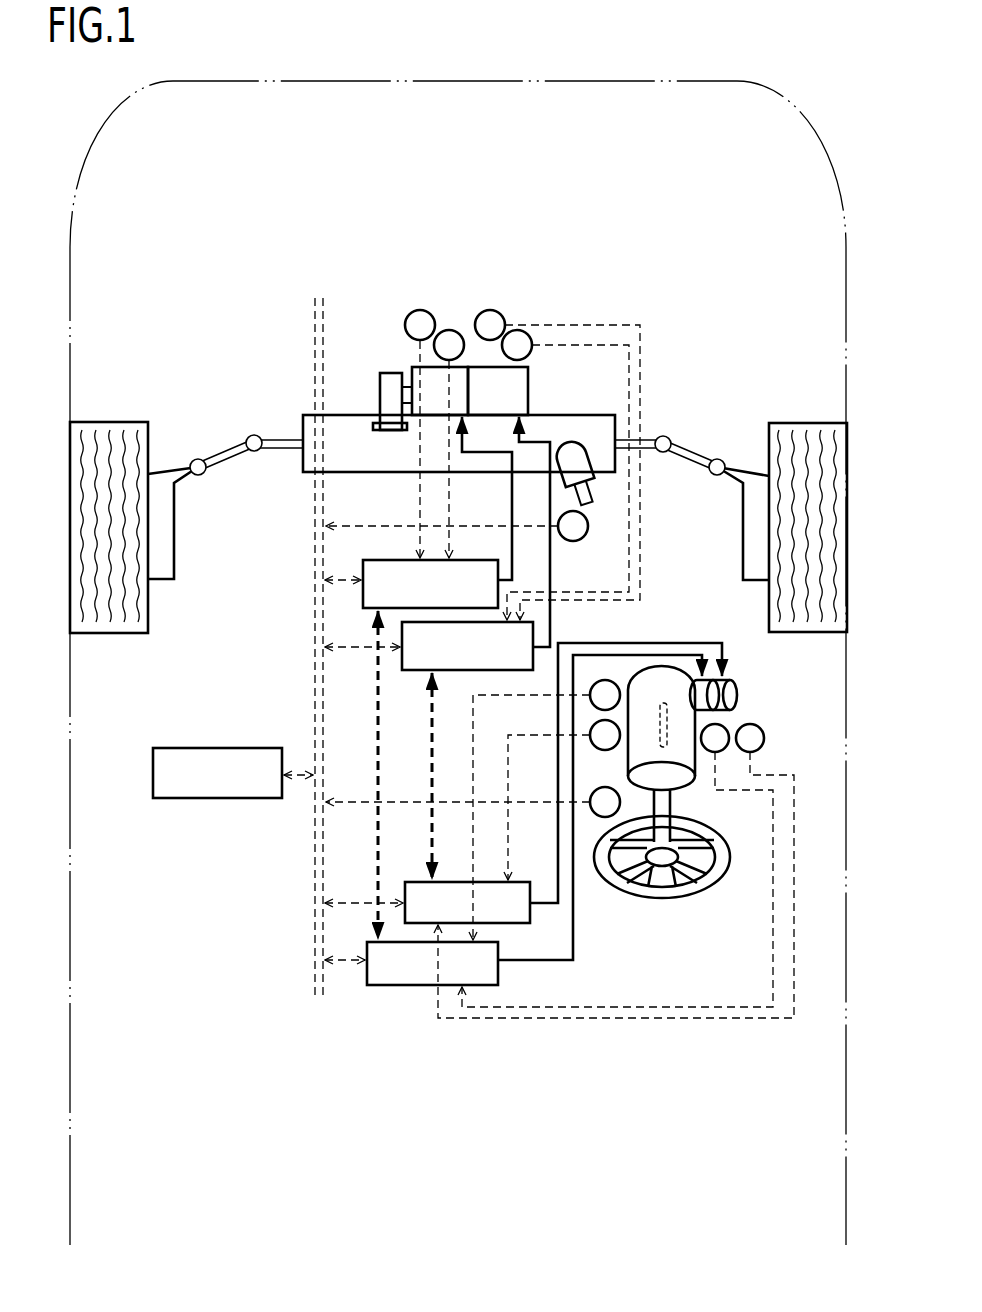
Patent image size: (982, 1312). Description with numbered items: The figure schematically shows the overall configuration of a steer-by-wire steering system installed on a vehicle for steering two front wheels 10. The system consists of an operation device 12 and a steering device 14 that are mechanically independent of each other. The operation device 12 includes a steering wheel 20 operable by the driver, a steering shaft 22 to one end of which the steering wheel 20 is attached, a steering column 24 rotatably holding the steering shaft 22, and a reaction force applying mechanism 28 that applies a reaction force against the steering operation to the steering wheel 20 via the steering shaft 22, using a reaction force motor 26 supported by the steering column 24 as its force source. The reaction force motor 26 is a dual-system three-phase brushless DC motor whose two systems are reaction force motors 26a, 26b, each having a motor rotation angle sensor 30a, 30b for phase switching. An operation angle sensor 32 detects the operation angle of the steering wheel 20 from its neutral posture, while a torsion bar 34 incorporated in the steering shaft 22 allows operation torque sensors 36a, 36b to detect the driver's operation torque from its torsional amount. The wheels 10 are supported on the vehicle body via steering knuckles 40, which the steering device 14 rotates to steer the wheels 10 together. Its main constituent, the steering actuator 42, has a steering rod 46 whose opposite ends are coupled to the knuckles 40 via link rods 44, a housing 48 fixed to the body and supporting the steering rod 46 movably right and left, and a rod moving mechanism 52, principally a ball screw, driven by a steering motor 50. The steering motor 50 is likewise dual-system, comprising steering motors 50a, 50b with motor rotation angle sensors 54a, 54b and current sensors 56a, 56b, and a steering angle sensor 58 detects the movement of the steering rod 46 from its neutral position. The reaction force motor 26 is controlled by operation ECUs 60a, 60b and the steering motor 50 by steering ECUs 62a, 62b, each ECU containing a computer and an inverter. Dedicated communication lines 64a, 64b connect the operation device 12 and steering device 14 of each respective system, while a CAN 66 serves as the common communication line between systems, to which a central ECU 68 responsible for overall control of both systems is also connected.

The wheel 10 is at (94, 420).
The operation device 12 is at (663, 919).
The steering device 14 is at (599, 282).
The steering wheel 20 is at (628, 888).
The steering shaft 22 is at (670, 800).
The steering column 24 is at (648, 672).
The reaction force motor 26 is at (733, 658).
The reaction force motor 26a is at (706, 683).
The reaction force motor 26b is at (725, 698).
The reaction force applying mechanism 28 is at (678, 652).
The motor rotation angle sensor 30a is at (723, 750).
The motor rotation angle sensor 30b is at (764, 740).
The operation angle sensor 32 is at (592, 812).
The torsion bar 34 is at (652, 730).
The operation torque sensor 36a is at (590, 702).
The operation torque sensor 36b is at (595, 745).
The steering knuckle 40 is at (160, 482).
The steering actuator 42 is at (383, 332).
The link rod 44 is at (222, 452).
The steering rod 46 is at (278, 440).
The housing 48 is at (339, 428).
The steering motor 50 is at (502, 282).
The steering motor 50a is at (464, 372).
The steering motor 50b is at (520, 385).
The rod moving mechanism 52 is at (390, 350).
The motor rotation angle sensor 54a is at (420, 310).
The motor rotation angle sensor 54b is at (497, 312).
The current sensor 56a is at (449, 330).
The current sensor 56b is at (522, 332).
The steering angle sensor 58 is at (573, 542).
The operation electronic control unit 60a is at (490, 976).
The operation electronic control unit 60b is at (512, 924).
The steering electronic control unit 62a is at (363, 598).
The steering electronic control unit 62b is at (412, 670).
The dedicated communication line 64a is at (375, 770).
The dedicated communication line 64b is at (427, 788).
The CAN 66 is at (314, 582).
The central electronic control unit 68 is at (167, 758).